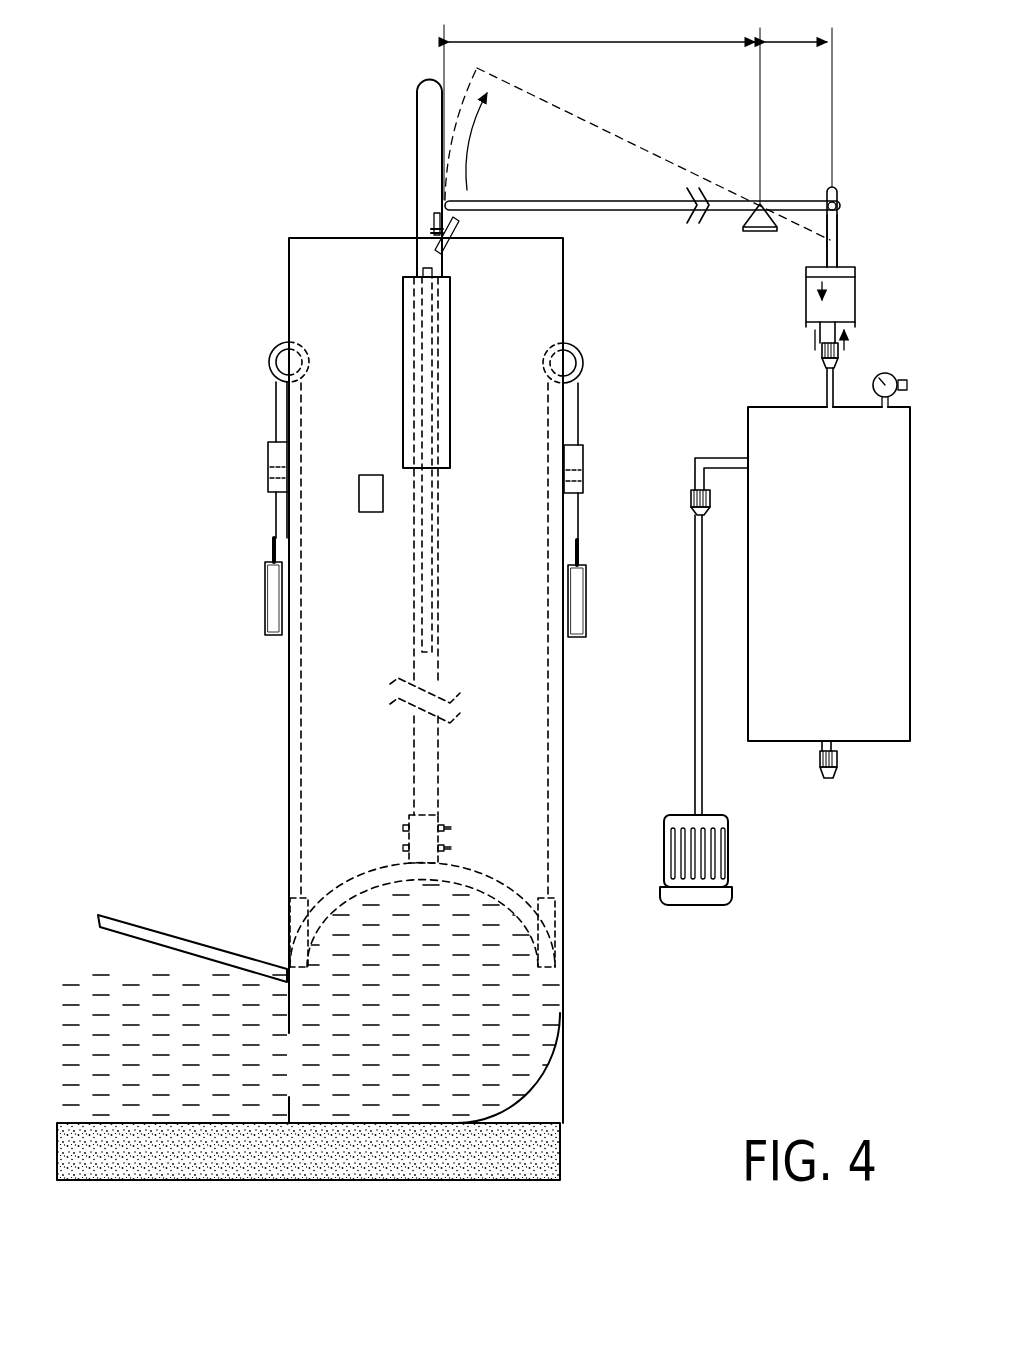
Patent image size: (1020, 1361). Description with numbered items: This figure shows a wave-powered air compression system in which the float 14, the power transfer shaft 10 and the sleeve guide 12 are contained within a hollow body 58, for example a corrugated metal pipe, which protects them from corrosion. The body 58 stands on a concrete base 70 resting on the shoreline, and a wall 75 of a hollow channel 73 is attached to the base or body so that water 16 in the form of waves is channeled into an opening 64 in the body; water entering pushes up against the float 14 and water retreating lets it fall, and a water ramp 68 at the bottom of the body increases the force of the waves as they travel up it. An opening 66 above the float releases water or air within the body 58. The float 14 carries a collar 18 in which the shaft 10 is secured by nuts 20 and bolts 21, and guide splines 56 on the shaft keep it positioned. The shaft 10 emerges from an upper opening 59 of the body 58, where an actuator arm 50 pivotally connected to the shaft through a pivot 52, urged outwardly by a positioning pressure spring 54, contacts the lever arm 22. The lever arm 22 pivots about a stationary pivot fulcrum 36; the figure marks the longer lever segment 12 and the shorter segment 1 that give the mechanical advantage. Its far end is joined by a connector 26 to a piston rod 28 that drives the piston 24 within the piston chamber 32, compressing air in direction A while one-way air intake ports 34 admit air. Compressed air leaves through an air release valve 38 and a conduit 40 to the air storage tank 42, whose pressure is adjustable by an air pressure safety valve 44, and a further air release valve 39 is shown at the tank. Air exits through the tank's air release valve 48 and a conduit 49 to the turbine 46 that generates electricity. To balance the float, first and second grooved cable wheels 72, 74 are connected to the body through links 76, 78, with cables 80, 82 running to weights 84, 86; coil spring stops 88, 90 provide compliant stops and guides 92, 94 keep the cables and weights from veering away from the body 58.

The lever arm short segment length 1 is at (796, 104).
The power transfer shaft 10 is at (417, 118).
The sleeve guide 12 is at (380, 362).
The float 14 is at (497, 888).
The waves 16 is at (233, 1007).
The collar 18 is at (438, 815).
The nuts 20 is at (403, 828).
The bolts 21 is at (451, 848).
The lever arm 22 is at (597, 211).
The piston 24 is at (855, 273).
The connector 26 is at (840, 190).
The piston rod 28 is at (838, 226).
The piston chamber 32 is at (855, 300).
The one-way air intake port 34 is at (808, 326).
The stationary pivot fulcrum 36 is at (749, 231).
The air release valve 38 is at (822, 350).
The air release valve 39 is at (820, 760).
The conduit 40 is at (827, 385).
The air storage tank 42 is at (905, 741).
The air pressure safety valve 44 is at (892, 373).
The turbine 46 is at (728, 850).
The air release valve 48 is at (691, 498).
The conduit 49 is at (695, 620).
The actuator arm 50 is at (450, 246).
The pivot 52 is at (426, 243).
The positioning pressure spring 54 is at (437, 213).
The guide spline 56 is at (432, 517).
The hollow body 58 is at (310, 238).
The upper opening 59 is at (400, 231).
The opening 64 is at (266, 1065).
The opening 66 is at (371, 475).
The water ramp 68 is at (543, 1095).
The concrete base 70 is at (558, 1150).
The first grooved cable wheel 72 is at (578, 350).
The hollow channel 73 is at (104, 948).
The second grooved cable wheel 74 is at (276, 350).
The wall 75 is at (188, 938).
The link 76 is at (548, 898).
The link 78 is at (295, 897).
The cable 80 is at (578, 512).
The cable 82 is at (275, 508).
The weight 84 is at (586, 595).
The weight 86 is at (265, 595).
The coil spring stop 88 is at (578, 552).
The coil spring stop 90 is at (273, 548).
The guide 92 is at (583, 472).
The guide 94 is at (268, 475).